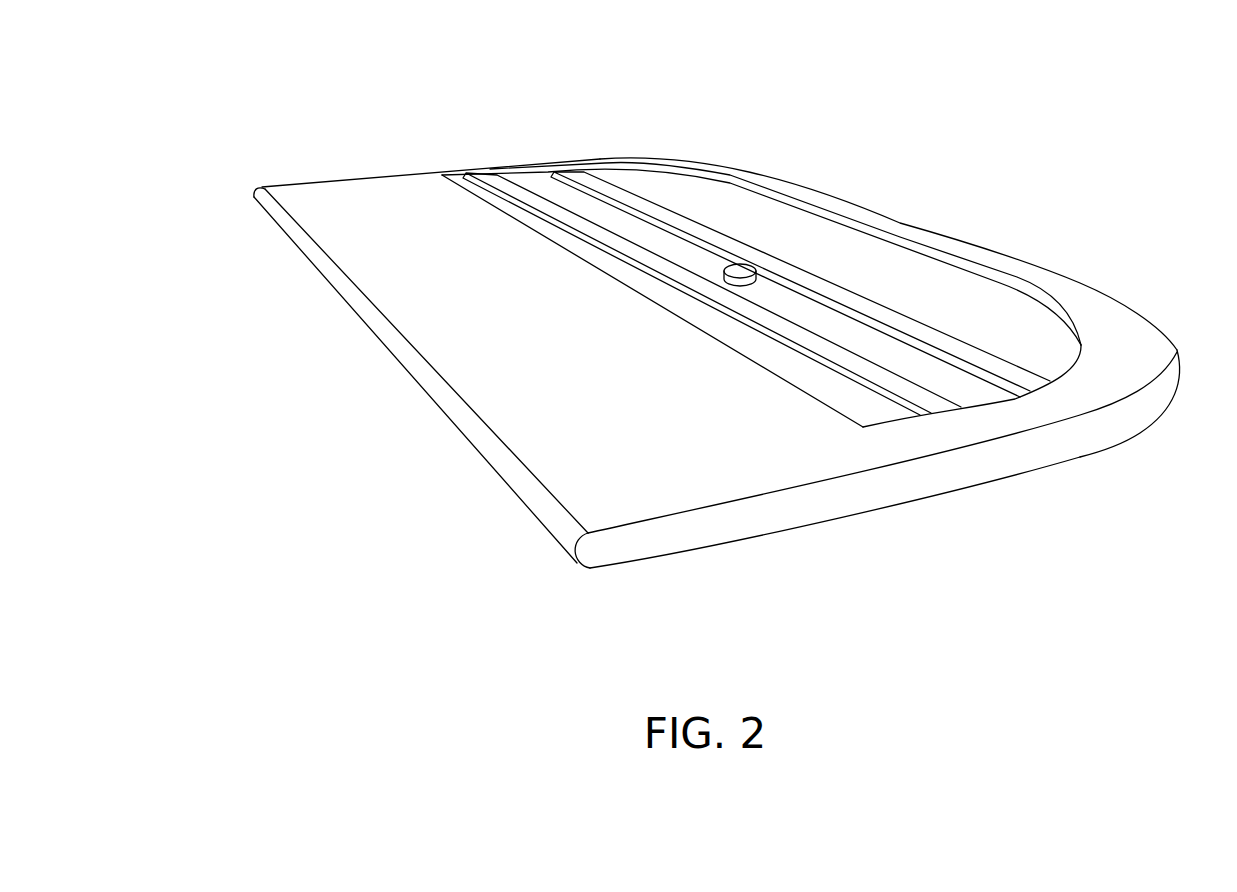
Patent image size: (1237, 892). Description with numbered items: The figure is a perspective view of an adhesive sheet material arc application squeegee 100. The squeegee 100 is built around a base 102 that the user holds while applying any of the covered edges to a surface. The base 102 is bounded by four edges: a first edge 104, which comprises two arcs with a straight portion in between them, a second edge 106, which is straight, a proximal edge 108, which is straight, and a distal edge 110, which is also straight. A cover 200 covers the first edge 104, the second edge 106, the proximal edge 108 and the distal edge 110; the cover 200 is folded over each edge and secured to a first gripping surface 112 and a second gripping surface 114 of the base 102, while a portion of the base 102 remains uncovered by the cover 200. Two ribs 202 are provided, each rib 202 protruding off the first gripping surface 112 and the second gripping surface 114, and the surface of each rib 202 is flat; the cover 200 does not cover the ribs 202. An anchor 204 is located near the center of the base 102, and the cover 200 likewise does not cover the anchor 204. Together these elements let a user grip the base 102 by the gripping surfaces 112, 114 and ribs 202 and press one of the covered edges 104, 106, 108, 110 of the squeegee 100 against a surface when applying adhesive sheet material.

The adhesive sheet material arc application squeegee 100 is at (258, 185).
The base 102 is at (668, 190).
The first edge 104 is at (985, 247).
The second edge 106 is at (385, 330).
The proximal edge 108 is at (650, 545).
The distal edge 110 is at (410, 170).
The first gripping surface 112 is at (1055, 362).
The second gripping surface 114 is at (827, 525).
The cover 200 is at (1083, 397).
The rib 202 is at (493, 172).
The anchor 204 is at (742, 266).